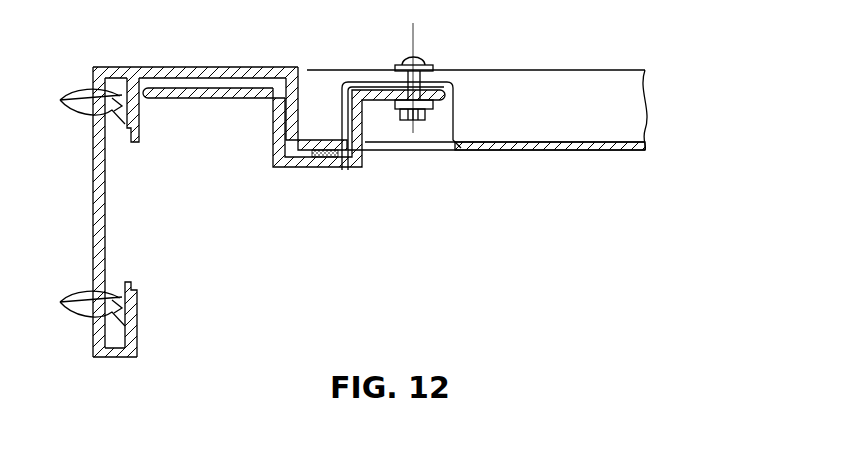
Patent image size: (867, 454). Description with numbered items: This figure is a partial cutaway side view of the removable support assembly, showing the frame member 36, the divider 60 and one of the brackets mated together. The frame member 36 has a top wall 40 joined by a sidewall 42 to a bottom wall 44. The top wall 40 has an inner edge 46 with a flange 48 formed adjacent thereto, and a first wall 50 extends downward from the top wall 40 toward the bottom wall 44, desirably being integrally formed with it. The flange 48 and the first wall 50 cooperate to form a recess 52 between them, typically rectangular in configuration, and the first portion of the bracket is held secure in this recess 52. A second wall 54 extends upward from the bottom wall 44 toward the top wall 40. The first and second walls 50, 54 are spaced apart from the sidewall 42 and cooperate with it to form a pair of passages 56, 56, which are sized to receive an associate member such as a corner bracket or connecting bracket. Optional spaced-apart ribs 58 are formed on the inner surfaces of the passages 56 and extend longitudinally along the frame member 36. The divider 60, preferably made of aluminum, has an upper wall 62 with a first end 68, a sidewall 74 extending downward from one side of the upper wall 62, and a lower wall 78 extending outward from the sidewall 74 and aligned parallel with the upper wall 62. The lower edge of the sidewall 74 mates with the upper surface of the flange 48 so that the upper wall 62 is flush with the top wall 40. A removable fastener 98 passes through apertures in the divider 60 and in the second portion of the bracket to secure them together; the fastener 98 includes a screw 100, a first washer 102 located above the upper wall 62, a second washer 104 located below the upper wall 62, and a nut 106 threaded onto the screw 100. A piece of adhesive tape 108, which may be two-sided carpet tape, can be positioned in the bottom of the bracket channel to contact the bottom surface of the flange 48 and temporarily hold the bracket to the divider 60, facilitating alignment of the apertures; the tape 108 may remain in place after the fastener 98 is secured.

The frame member 36 is at (96, 60).
The top wall 40 is at (192, 67).
The sidewall 42 is at (93, 168).
The bottom wall 44 is at (115, 358).
The inner edge 46 is at (352, 167).
The flange 48 is at (310, 118).
The first wall 50 is at (140, 135).
The recess 52 is at (210, 125).
The second wall 54 is at (139, 318).
The passage 56 is at (116, 148).
The rib 58 is at (77, 207).
The divider 60 is at (602, 62).
The upper wall 62 is at (522, 70).
The first end 68 is at (303, 86).
The sidewall 74 is at (585, 115).
The lower wall 78 is at (552, 150).
The fastener 98 is at (445, 38).
The screw 100 is at (405, 58).
The first washer 102 is at (396, 68).
The second washer 104 is at (397, 108).
The nut 106 is at (430, 112).
The adhesive tape 108 is at (320, 153).